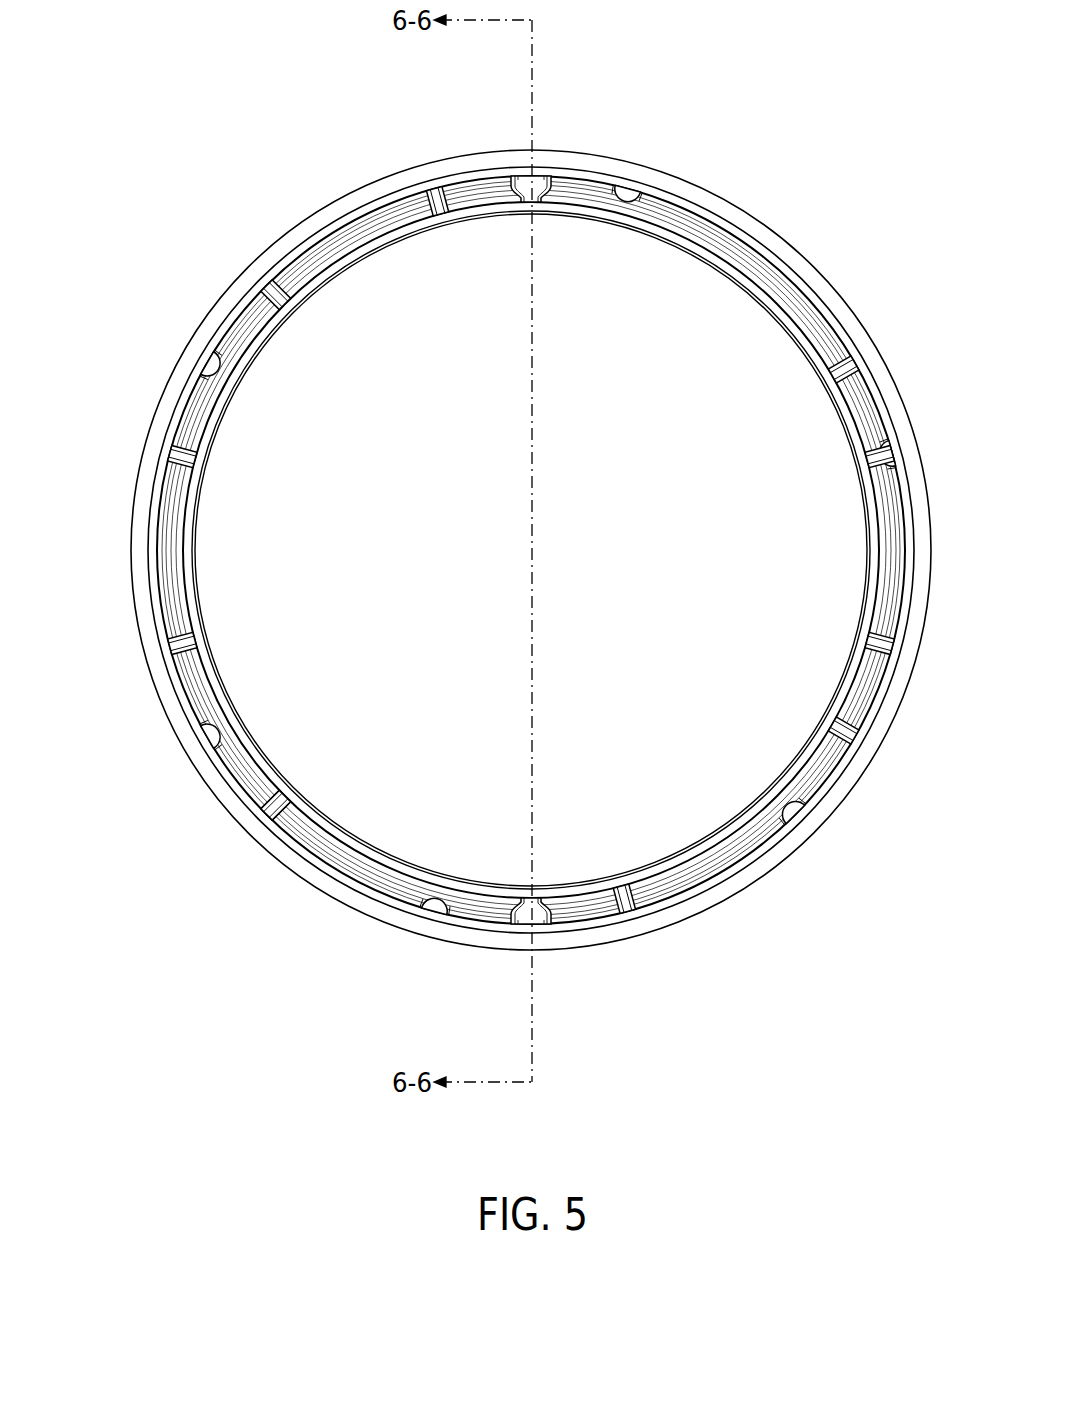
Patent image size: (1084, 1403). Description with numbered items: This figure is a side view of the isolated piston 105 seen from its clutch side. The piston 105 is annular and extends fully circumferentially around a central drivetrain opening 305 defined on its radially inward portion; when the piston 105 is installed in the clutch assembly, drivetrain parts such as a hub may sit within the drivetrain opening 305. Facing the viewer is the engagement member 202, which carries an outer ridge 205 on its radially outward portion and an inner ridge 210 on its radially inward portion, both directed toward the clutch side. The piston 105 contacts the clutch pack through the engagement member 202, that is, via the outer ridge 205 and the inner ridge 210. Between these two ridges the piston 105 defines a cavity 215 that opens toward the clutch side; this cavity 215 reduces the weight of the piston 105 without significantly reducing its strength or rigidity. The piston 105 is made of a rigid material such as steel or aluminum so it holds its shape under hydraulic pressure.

The piston 105 is at (497, 558).
The engagement member 202 is at (483, 193).
The outer ridge 205 is at (663, 907).
The inner ridge 210 is at (297, 284).
The cavity 215 is at (313, 840).
The drivetrain opening 305 is at (598, 602).